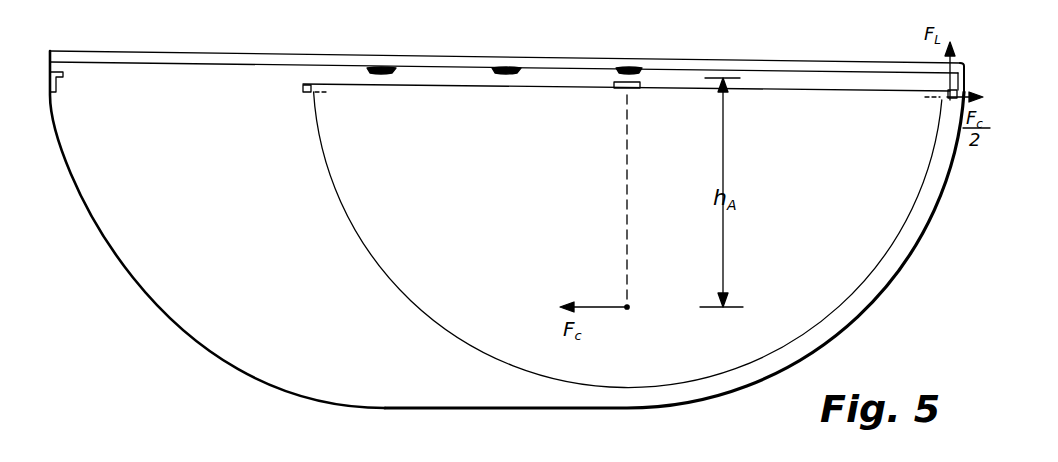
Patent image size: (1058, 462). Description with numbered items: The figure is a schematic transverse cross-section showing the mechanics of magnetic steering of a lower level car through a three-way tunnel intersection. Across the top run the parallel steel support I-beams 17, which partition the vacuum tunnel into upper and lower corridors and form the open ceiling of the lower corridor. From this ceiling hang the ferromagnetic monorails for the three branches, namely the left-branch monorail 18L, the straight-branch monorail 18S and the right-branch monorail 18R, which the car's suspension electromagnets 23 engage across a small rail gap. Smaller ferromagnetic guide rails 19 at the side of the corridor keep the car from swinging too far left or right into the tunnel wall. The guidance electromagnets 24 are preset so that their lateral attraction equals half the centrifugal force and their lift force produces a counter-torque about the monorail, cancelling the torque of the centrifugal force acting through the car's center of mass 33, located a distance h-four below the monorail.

The support I-beam 17 is at (208, 52).
The guide rail 19 is at (64, 79).
The guidance electromagnet 24 is at (306, 85).
The monorail of left branch 18L is at (407, 38).
The monorail of straight branch 18S is at (531, 38).
The monorail of right branch 18R is at (669, 38).
The suspension electromagnet 23 is at (614, 84).
The center of mass 33 is at (630, 306).